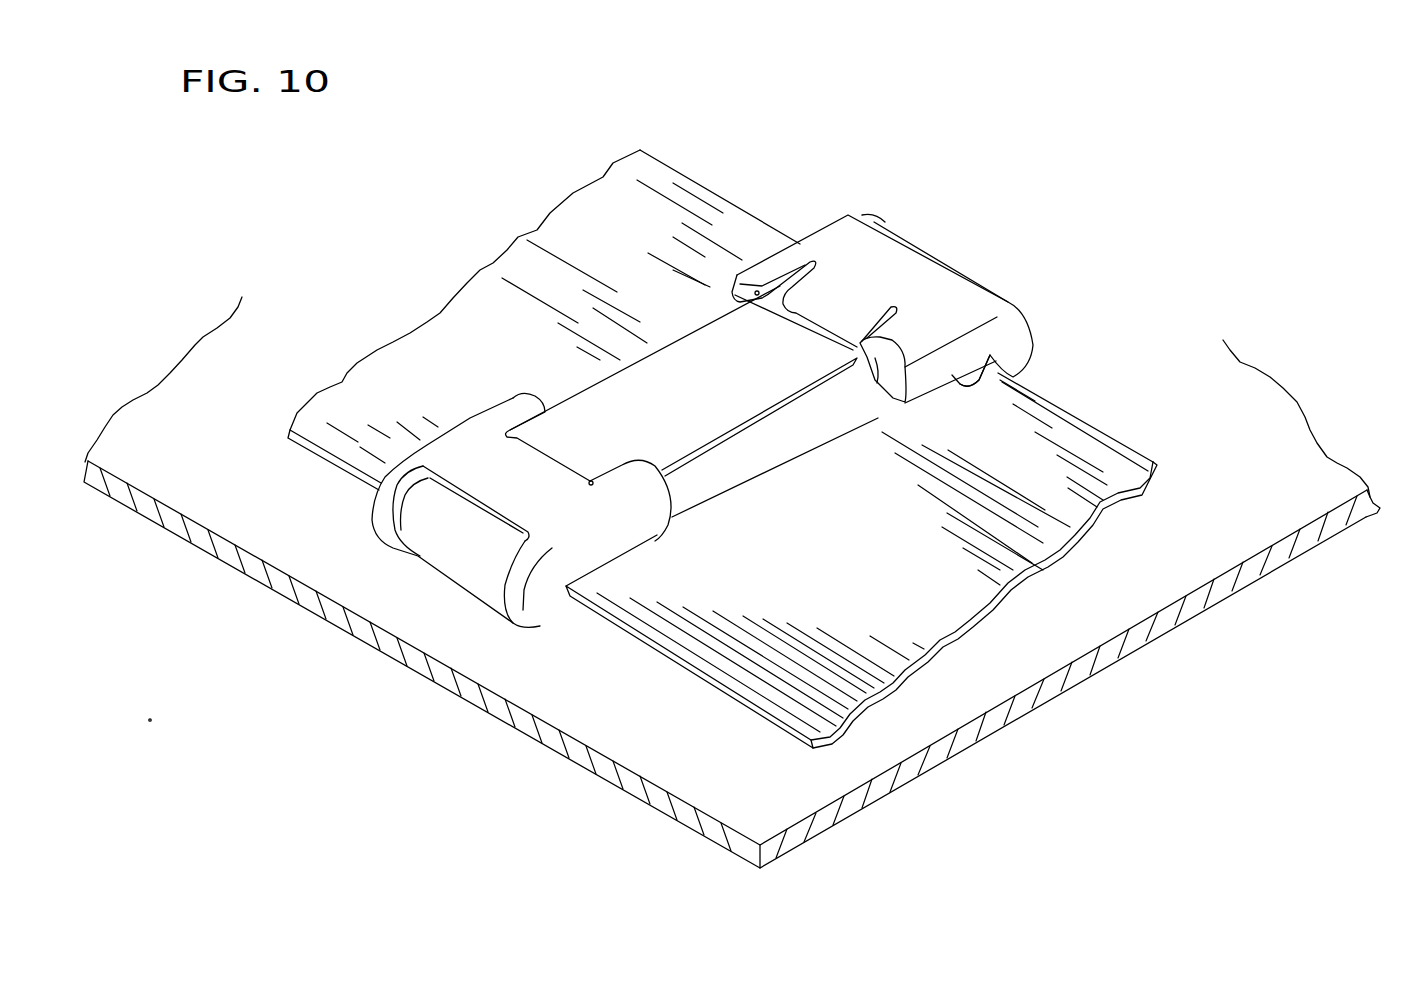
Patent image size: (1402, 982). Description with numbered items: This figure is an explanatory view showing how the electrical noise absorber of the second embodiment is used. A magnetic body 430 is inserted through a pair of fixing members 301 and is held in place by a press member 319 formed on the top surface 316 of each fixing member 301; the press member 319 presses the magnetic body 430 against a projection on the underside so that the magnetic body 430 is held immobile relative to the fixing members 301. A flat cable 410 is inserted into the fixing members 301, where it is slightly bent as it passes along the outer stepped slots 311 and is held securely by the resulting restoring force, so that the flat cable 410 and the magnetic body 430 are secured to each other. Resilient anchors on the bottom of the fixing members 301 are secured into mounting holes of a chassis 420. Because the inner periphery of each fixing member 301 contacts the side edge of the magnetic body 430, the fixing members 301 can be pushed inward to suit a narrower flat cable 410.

The fixing member 301 is at (742, 373).
The outer stepped slot 311 is at (996, 361).
The top surface 316 is at (925, 262).
The press member 319 is at (830, 330).
The flat cable 410 is at (1067, 397).
The chassis 420 is at (1210, 545).
The magnetic body 430 is at (692, 347).